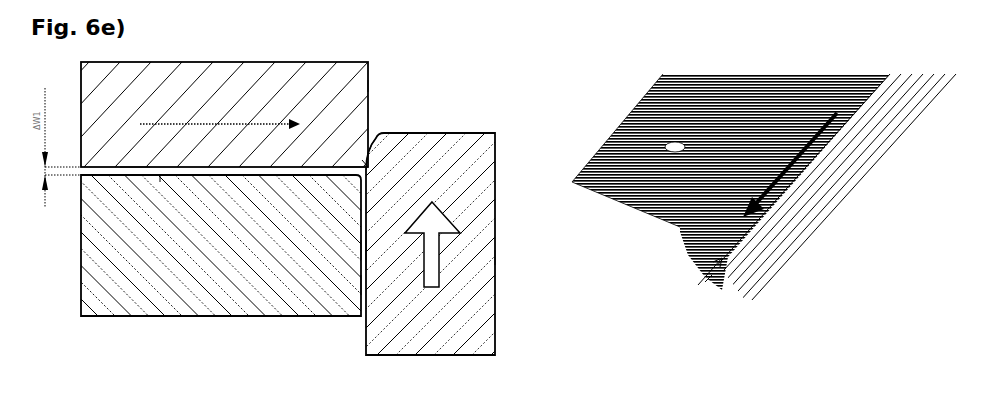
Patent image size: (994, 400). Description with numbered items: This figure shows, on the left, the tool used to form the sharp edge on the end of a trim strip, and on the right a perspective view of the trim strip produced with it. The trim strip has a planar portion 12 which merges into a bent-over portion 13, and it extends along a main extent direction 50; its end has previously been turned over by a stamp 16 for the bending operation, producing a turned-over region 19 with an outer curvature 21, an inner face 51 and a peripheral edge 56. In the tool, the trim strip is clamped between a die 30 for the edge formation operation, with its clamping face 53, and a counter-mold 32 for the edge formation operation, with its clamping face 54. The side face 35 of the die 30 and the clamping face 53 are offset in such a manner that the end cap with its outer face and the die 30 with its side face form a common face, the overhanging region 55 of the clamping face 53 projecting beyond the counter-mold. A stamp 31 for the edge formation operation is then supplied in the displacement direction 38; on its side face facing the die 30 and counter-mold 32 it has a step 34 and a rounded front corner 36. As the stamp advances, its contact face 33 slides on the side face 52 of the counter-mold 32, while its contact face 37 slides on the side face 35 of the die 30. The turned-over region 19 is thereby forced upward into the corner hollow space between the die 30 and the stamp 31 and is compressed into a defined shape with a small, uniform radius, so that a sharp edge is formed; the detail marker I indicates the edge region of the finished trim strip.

The planar portion of trim strip 12 is at (660, 193).
The bent-over portion of trim strip 13 is at (805, 212).
The stamp for the bending operation 16 is at (676, 138).
The turned-over region of trim strip 19 is at (693, 267).
The outer curvature 21 is at (727, 258).
The die for edge formation operation 30 is at (218, 75).
The stamp for edge formation operation 31 is at (495, 135).
The counter-mold for edge formation operation 32 is at (123, 293).
The contact face of stamp with counter-mold 33 is at (358, 285).
The step in stamp 34 is at (370, 248).
The side face of die 35 is at (372, 86).
The rounded front corner of stamp 36 is at (379, 130).
The contact face of stamp with die 37 is at (398, 167).
The displacement direction of stamp 38 is at (440, 257).
The main extent direction of trim strip 50 is at (865, 130).
The inner face of turned-over region 51 is at (358, 193).
The side face of counter-mold 52 is at (358, 253).
The clamping face of die 53 is at (137, 172).
The clamping face of counter-mold 54 is at (163, 180).
The overhanging region of clamping face 55 is at (367, 165).
The peripheral edge of turned-over region 56 is at (380, 222).
The detail marker I is at (720, 260).